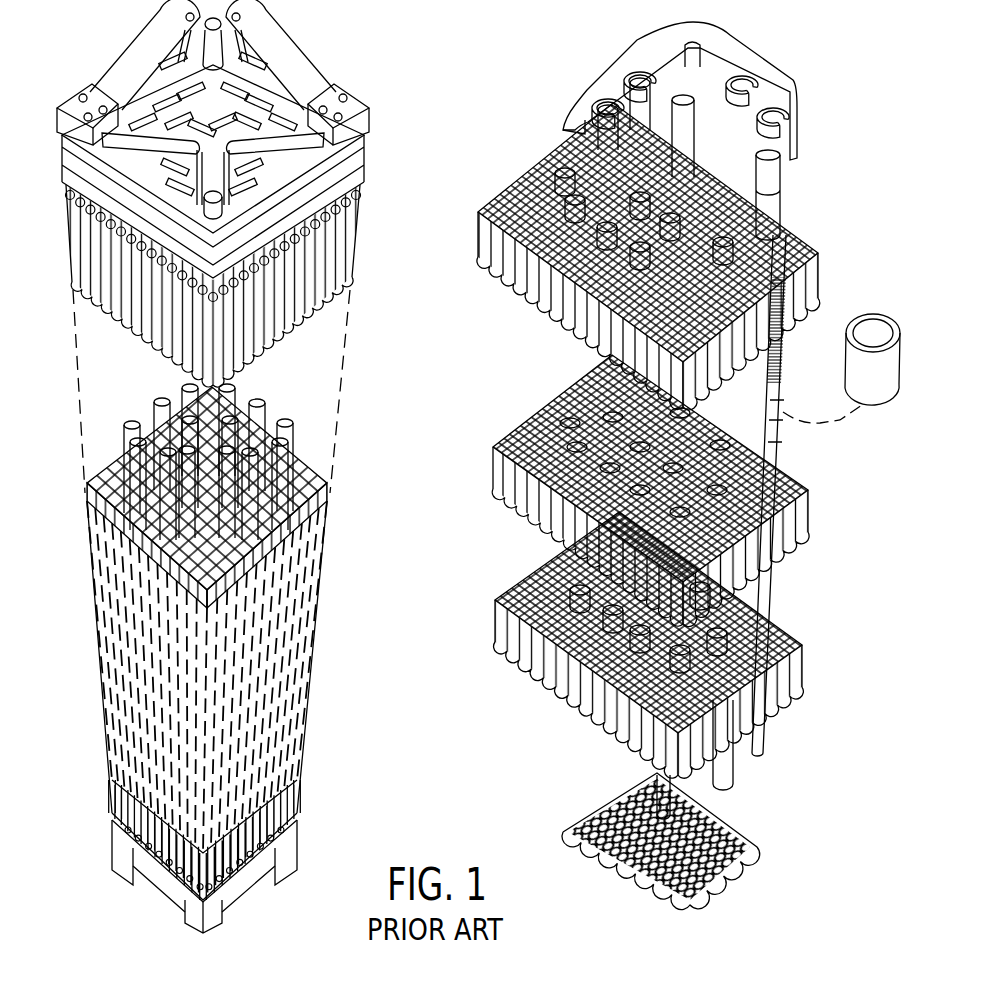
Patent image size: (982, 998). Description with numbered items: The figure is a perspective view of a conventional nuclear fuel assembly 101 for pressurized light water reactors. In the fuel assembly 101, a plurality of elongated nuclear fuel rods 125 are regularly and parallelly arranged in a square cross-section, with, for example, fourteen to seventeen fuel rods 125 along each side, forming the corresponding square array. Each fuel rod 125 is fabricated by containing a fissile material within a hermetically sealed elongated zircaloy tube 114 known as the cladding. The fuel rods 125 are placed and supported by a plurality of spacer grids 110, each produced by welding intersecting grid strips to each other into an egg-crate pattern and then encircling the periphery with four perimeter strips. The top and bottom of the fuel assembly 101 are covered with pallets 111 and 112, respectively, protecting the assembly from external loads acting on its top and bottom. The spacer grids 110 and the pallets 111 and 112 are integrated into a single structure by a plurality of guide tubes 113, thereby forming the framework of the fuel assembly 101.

The fuel assembly 101 is at (100, 692).
The spacer grid 110 is at (500, 470).
The pallet 111 is at (372, 158).
The pallet 112 is at (293, 856).
The guide tube 113 is at (122, 440).
The zircaloy tube 114 is at (858, 357).
The nuclear fuel rod 125 is at (357, 217).